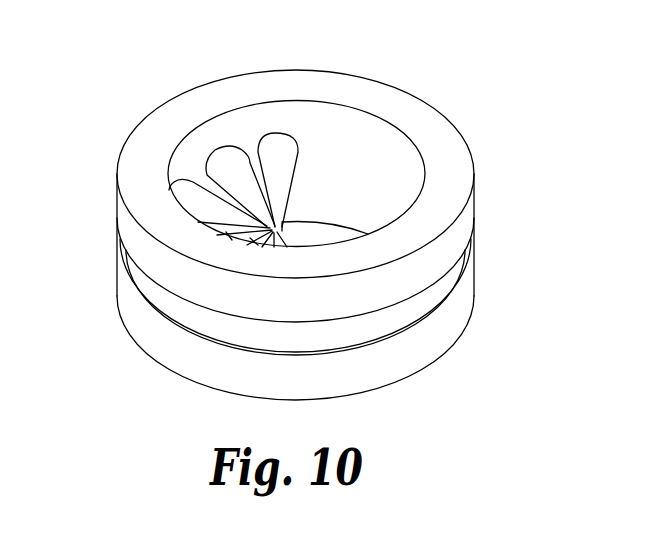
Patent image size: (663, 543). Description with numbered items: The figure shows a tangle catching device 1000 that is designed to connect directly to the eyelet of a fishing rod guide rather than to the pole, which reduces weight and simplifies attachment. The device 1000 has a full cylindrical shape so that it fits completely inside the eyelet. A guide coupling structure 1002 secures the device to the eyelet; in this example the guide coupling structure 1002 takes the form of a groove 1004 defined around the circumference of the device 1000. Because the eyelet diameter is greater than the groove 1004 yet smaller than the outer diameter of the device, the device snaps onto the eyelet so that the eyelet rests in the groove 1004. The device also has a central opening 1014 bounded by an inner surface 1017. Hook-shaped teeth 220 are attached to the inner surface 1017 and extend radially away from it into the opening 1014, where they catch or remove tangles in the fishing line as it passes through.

The tangle catching device 1000 is at (322, 202).
The guide coupling structure 1002 is at (322, 170).
The groove 1004 is at (437, 291).
The opening 1014 is at (329, 151).
The inner surface 1017 is at (237, 123).
The teeth 220 is at (230, 162).